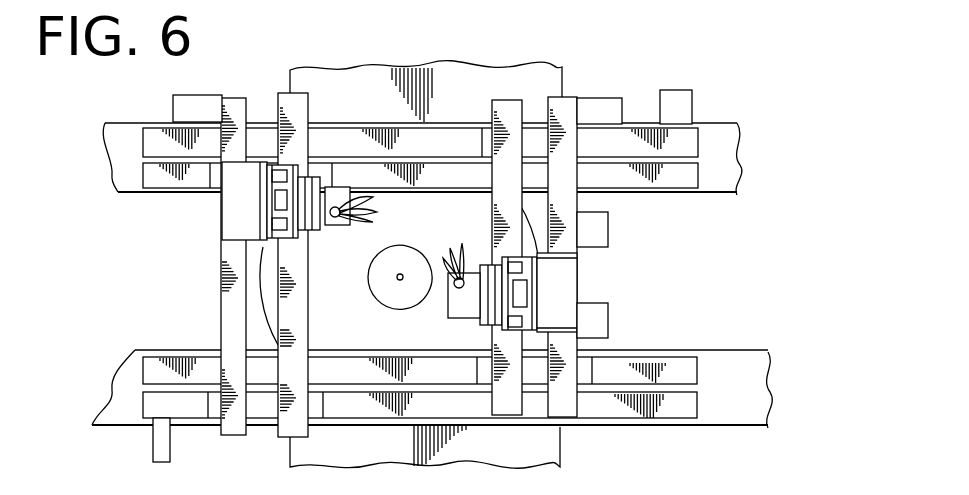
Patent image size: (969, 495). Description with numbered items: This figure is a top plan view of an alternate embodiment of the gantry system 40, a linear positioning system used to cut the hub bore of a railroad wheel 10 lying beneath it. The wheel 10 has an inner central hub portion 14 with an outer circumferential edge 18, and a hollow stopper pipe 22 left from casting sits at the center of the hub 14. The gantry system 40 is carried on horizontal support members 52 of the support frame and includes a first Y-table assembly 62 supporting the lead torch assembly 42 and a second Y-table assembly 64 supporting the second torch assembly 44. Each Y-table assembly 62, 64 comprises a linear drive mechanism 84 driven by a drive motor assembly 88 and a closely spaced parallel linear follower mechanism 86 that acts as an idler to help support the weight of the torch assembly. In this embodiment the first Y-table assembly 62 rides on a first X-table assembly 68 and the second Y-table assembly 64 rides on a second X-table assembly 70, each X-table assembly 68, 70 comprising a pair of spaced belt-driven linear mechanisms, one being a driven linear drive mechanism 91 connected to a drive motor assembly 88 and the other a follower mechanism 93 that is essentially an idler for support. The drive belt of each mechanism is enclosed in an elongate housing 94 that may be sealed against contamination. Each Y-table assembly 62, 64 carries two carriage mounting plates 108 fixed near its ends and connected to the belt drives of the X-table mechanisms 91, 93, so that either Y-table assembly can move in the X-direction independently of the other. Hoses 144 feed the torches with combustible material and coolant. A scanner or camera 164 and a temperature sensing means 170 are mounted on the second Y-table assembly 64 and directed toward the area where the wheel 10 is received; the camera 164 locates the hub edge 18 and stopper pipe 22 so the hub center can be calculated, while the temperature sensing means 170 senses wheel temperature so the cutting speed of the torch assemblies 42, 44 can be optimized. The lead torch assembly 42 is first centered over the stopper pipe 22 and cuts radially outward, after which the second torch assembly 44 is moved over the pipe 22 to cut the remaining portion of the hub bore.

The railroad wheel 10 is at (265, 283).
The inner central hub portion 14 is at (380, 277).
The outer circumferential edge 18 is at (376, 296).
The stopper pipe 22 is at (398, 272).
The gantry system 40 is at (680, 413).
The lead torch assembly 42 is at (222, 238).
The second torch assembly 44 is at (560, 288).
The horizontal support member 52 is at (715, 160).
The first Y-table assembly 62 is at (228, 258).
The second Y-table assembly 64 is at (504, 402).
The first X-table assembly 68 is at (150, 170).
The second X-table assembly 70 is at (153, 135).
The linear drive mechanism 84 is at (234, 105).
The linear follower mechanism 86 is at (497, 108).
The drive motor assembly 88 is at (205, 108).
The linear drive mechanism 91 is at (690, 150).
The follower mechanism 93 is at (692, 183).
The elongate housing 94 is at (627, 148).
The carriage mounting plate 108 is at (215, 185).
The hose 144 is at (456, 262).
The scanner or camera 164 is at (594, 320).
The temperature sensing means 170 is at (596, 233).